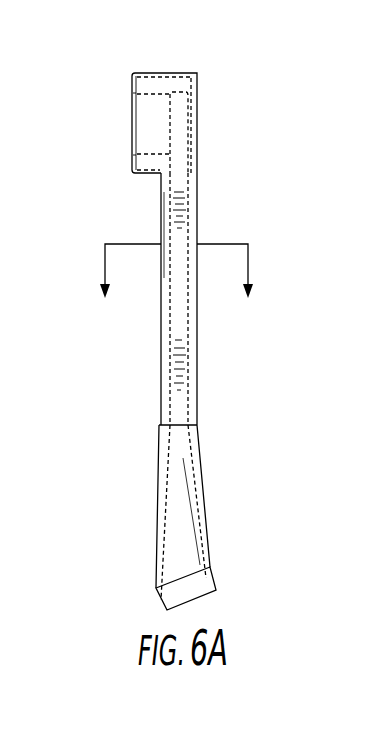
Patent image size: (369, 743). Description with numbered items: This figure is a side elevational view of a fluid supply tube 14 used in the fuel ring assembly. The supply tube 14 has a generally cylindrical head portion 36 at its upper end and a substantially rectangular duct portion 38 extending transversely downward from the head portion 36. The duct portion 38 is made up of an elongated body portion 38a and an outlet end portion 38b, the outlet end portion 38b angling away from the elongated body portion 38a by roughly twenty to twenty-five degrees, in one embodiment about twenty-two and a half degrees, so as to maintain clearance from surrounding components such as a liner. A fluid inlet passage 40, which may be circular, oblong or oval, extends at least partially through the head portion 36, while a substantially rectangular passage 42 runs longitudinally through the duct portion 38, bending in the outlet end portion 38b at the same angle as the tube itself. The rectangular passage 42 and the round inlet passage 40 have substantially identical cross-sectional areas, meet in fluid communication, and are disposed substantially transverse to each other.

The fluid supply tube 14 is at (82, 107).
The head portion 36 is at (131, 52).
The fluid inlet passage 40 is at (152, 128).
The duct portion 38 is at (68, 330).
The elongated body portion 38a is at (197, 203).
The outlet end portion 38b is at (202, 490).
The rectangular passage 42 is at (175, 340).